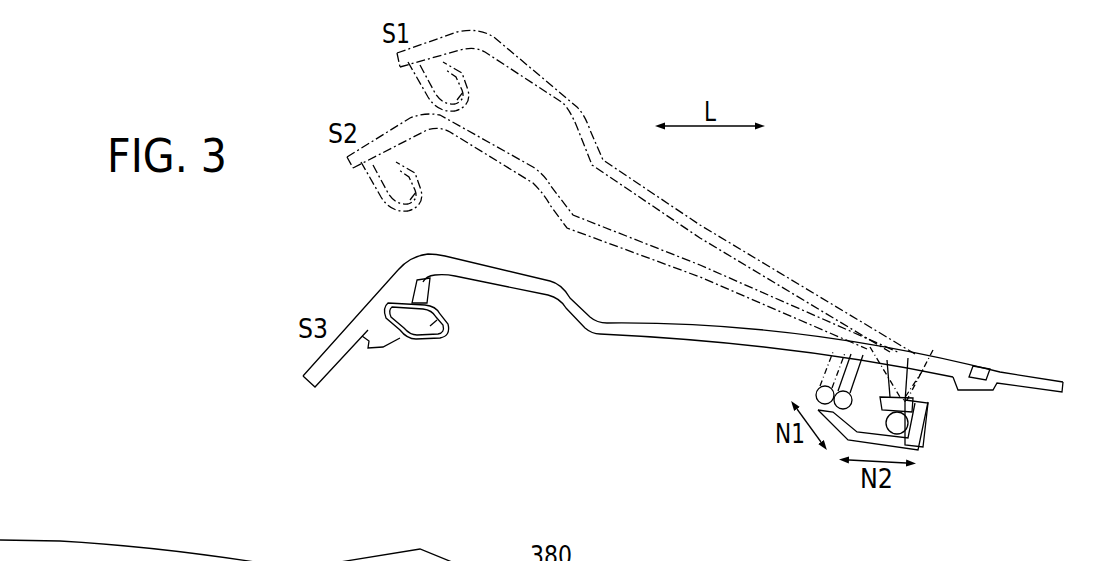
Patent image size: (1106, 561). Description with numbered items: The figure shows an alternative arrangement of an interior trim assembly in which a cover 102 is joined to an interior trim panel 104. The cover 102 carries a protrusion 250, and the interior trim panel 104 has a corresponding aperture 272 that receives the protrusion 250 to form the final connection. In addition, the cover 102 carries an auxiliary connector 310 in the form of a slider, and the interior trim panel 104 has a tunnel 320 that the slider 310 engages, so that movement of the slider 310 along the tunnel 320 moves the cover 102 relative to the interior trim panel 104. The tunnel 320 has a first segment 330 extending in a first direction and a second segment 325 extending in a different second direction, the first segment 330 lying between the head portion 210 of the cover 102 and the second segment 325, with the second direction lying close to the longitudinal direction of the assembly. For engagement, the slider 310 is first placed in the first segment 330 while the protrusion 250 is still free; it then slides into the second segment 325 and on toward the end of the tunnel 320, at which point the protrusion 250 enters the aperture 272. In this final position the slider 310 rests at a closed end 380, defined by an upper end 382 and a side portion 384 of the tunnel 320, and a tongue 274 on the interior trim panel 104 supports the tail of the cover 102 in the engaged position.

The cover 102 is at (640, 336).
The interior trim panel 104 is at (313, 367).
The head portion 210 is at (380, 290).
The protrusion 250 is at (455, 319).
The aperture 272 is at (409, 346).
The auxiliary connector 310 is at (906, 423).
The tunnel 320 is at (833, 452).
The second segment 325 is at (907, 447).
The first segment 330 is at (832, 417).
The closed end 380 is at (944, 401).
The upper end 382 is at (915, 407).
The side portion 384 is at (926, 438).
The tongue 274 is at (982, 390).